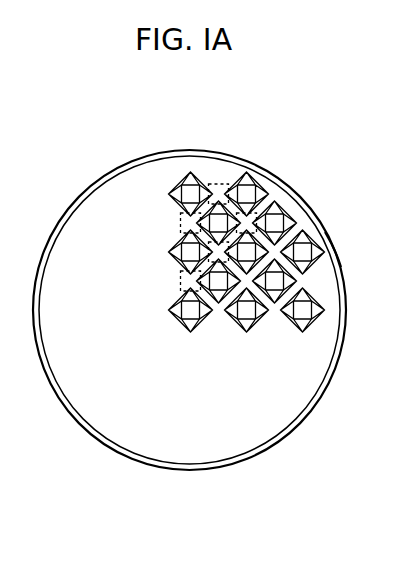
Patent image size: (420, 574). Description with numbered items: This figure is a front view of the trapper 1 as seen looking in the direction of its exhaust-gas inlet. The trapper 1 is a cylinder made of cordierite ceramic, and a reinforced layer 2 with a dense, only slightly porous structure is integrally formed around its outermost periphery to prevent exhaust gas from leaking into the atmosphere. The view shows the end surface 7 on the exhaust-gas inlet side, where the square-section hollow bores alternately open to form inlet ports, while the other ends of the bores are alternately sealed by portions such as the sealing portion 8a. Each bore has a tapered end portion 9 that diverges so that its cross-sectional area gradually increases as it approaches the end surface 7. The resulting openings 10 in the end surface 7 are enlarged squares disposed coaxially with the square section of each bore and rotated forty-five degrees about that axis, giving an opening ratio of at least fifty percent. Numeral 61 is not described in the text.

The trapper 1 is at (193, 473).
The reinforced layer 2 is at (259, 454).
The end surface 7 is at (226, 176).
The sealing portion 8a is at (248, 220).
The tapered end portion 9 is at (309, 236).
The opening 10 is at (315, 255).
The outer ring region 61 is at (340, 267).